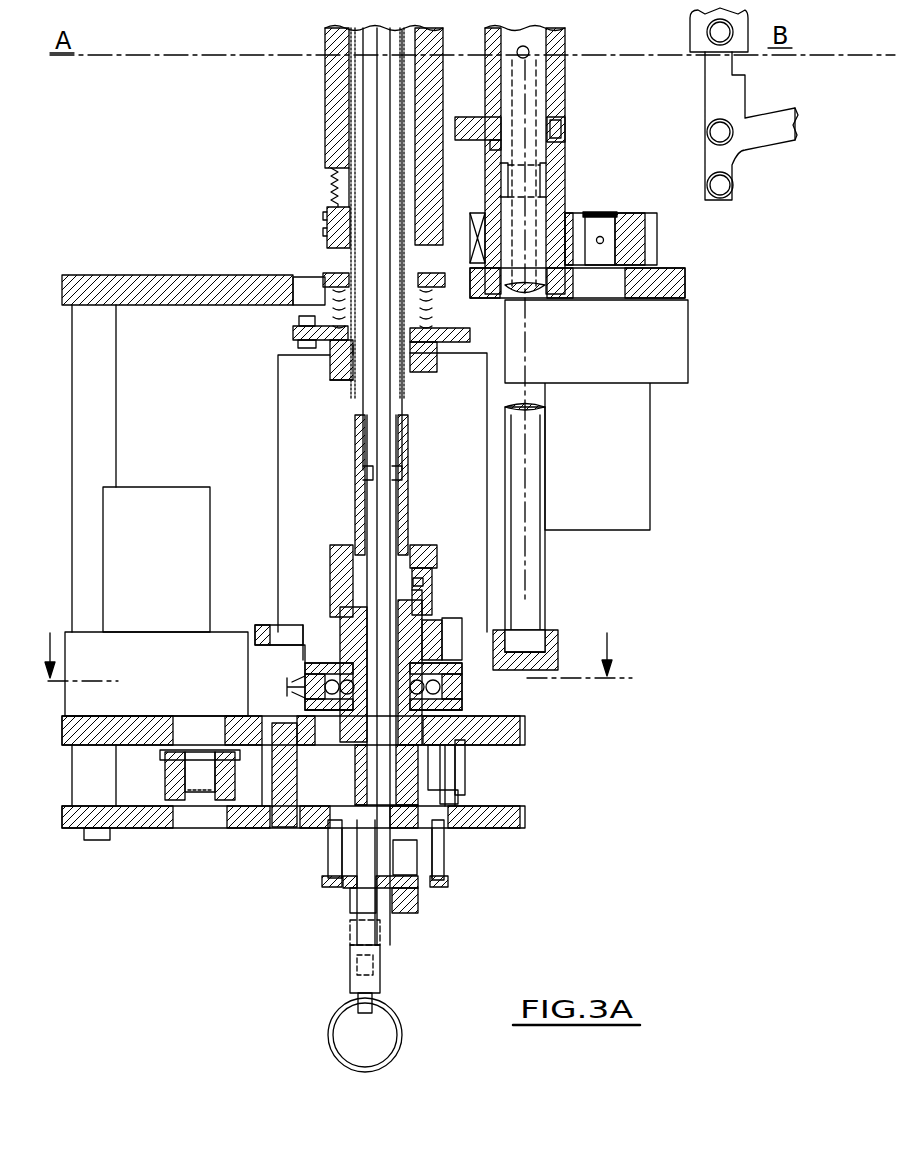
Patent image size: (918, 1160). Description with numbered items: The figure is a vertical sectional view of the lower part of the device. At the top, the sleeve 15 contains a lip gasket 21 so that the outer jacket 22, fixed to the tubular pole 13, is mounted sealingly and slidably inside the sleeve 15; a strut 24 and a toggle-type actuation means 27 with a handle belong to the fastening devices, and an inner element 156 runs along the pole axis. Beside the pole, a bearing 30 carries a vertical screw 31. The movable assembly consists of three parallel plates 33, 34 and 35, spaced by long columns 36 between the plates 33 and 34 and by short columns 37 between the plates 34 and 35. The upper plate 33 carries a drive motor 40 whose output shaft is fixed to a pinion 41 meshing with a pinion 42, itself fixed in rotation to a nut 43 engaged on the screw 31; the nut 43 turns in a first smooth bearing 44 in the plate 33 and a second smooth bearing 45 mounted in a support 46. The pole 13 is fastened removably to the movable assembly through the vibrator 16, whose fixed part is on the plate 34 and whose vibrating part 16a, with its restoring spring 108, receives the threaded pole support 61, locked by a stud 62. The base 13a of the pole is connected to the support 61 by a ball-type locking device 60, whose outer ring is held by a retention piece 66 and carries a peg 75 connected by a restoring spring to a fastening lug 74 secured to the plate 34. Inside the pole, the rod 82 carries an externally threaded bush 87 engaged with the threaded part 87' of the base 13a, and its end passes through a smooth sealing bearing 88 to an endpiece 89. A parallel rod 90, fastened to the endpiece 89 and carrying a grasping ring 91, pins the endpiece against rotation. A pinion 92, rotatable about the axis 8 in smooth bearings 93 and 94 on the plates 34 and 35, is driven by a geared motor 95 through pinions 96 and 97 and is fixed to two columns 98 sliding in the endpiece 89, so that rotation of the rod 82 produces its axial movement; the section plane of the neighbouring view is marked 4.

The section line 4- 4 is at (337, 676).
The axis 8 is at (386, 525).
The tubular pole 13 is at (358, 400).
The base of the pole 13a is at (455, 746).
The sleeve 15 is at (330, 130).
The vibrator 16 is at (481, 430).
The vibrating movable part of the vibrator 16a is at (338, 362).
The lip gasket 21 is at (327, 220).
The outer jacket 22 is at (350, 46).
The strut 24 is at (527, 45).
The toggle-type actuation means 27 is at (745, 97).
The bearing 30 is at (566, 96).
The screw 31 is at (530, 580).
The upper plate 33 is at (686, 292).
The plate 34 is at (500, 732).
The plate 35 is at (522, 815).
The long columns 36 is at (100, 430).
The short columns 37 is at (96, 778).
The drive motor 40 is at (645, 510).
The pinion 41 is at (630, 215).
The pinion 42 is at (478, 228).
The nut 43 is at (555, 180).
The first smooth bearing 44 is at (560, 298).
The second smooth bearing 45 is at (566, 130).
The support 46 is at (470, 125).
The ball-type locking device 60 is at (466, 686).
The pole support 61 is at (424, 610).
The stud 62 is at (424, 584).
The retention piece 66 is at (416, 705).
The fastening lug 74 is at (262, 666).
The peg 75 is at (348, 640).
The rod 82 is at (382, 406).
The externally threaded bush 87 is at (387, 752).
The threaded part 87' is at (444, 639).
The smooth sealing bearing 88 is at (385, 869).
The endpiece 89 is at (418, 895).
The rod 90 is at (365, 928).
The grasping ring 91 is at (340, 1015).
The pinion 92 is at (458, 797).
The smooth bearing 93 is at (438, 748).
The smooth bearing 94 is at (465, 826).
The geared motor 95 is at (167, 505).
The pinion 96 is at (182, 788).
The pinion 97 is at (272, 790).
The columns 98 is at (330, 858).
The restoring spring 108 is at (300, 314).
The rod 156 is at (400, 45).